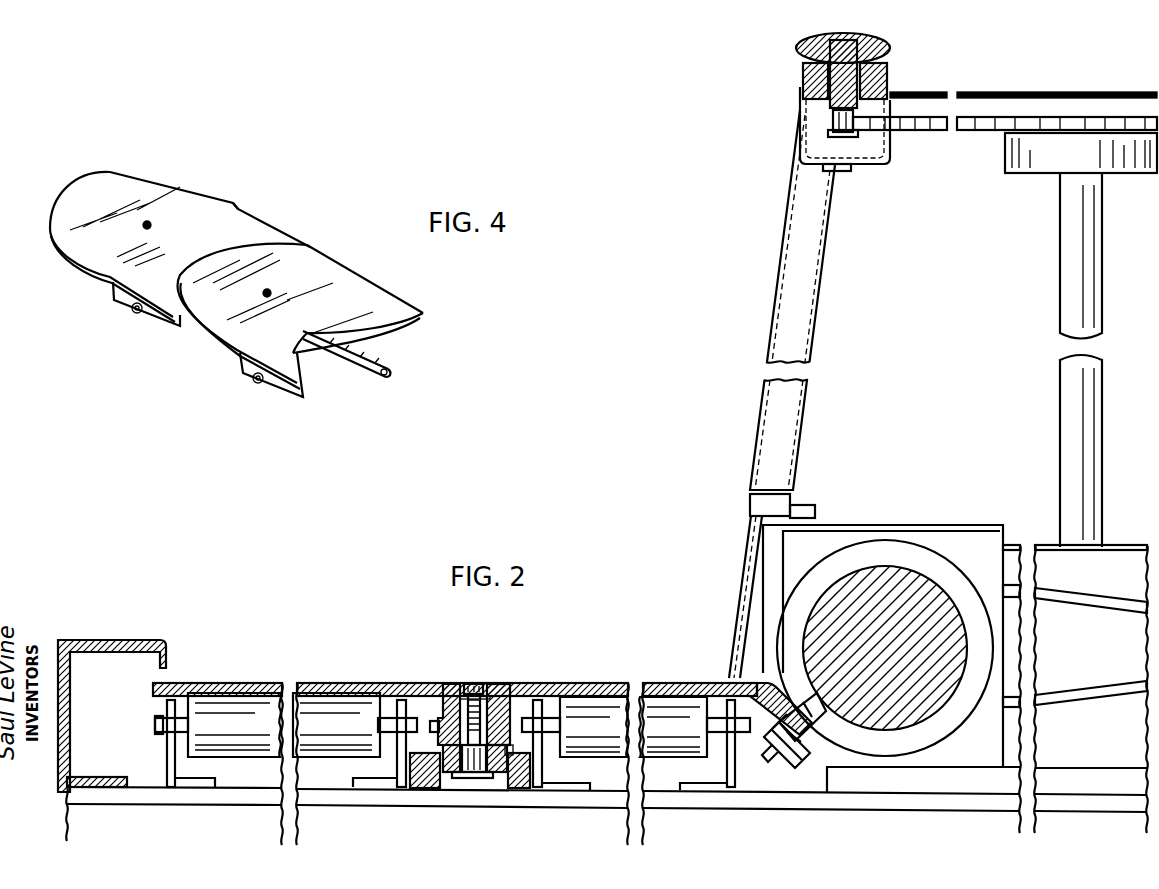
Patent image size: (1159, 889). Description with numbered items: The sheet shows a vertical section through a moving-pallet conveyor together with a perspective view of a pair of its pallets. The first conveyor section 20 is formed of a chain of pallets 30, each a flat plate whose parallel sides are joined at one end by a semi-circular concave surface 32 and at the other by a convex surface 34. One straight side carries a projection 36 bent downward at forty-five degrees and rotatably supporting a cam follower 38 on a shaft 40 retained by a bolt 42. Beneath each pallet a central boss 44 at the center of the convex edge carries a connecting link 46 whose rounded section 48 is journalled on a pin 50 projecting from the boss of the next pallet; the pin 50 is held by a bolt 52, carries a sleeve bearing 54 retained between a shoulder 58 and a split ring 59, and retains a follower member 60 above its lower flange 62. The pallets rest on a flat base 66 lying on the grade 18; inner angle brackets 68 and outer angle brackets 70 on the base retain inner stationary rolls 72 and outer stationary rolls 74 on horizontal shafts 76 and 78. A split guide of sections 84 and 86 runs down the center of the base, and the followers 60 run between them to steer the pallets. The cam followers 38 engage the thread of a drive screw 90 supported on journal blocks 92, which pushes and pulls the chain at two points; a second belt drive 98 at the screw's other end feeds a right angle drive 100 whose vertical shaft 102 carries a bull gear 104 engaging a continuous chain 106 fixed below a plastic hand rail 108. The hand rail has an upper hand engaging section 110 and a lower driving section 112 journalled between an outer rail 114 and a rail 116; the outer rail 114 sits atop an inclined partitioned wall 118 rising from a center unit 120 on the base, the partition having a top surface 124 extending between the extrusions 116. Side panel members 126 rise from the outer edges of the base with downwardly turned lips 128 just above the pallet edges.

In FIG. 2, the grade 18 is at (150, 834).
In FIG. 2, the first conveyor section 20 is at (303, 656).
In FIG. 4, the pallet 30 is at (123, 182).
In FIG. 2, the pallet 30 is at (320, 683).
In FIG. 4, the concave surface 32 is at (295, 360).
In FIG. 4, the convex surface 34 is at (237, 240).
In FIG. 4, the projection 36 is at (120, 292).
In FIG. 2, the projection 36 is at (768, 678).
In FIG. 4, the cam follower 38 is at (137, 313).
In FIG. 2, the cam follower 38 is at (841, 735).
In FIG. 2, the shaft 40 is at (800, 768).
In FIG. 2, the bolt 42 is at (772, 768).
In FIG. 2, the central boss 44 is at (450, 684).
In FIG. 4, the connecting link 46 is at (373, 357).
In FIG. 2, the connecting link 46 is at (512, 697).
In FIG. 4, the rounded section 48 is at (388, 375).
In FIG. 2, the rounded section 48 is at (438, 733).
In FIG. 2, the pin 50 is at (473, 778).
In FIG. 4, the bolt 52 is at (147, 225).
In FIG. 2, the bolt 52 is at (473, 684).
In FIG. 2, the sleeve bearing 54 is at (510, 750).
In FIG. 2, the shoulder 58 is at (458, 779).
In FIG. 2, the split ring 59 is at (497, 684).
In FIG. 2, the follower member 60 is at (440, 788).
In FIG. 2, the flange 62 is at (497, 788).
In FIG. 2, the base 66 is at (250, 796).
In FIG. 2, the inner angle bracket 68 is at (545, 783).
In FIG. 2, the outer angle bracket 70 is at (200, 780).
In FIG. 2, the inner stationary roll 72 is at (572, 704).
In FIG. 2, the outer stationary roll 74 is at (220, 705).
In FIG. 2, the shaft 76 is at (716, 715).
In FIG. 2, the shaft 78 is at (160, 731).
In FIG. 2, the guide section 84 is at (527, 789).
In FIG. 2, the guide section 86 is at (415, 790).
In FIG. 2, the drive screw 90 is at (890, 583).
In FIG. 2, the journal block 92 is at (970, 540).
In FIG. 2, the second belt drive 98 is at (1064, 596).
In FIG. 2, the right angle drive 100 is at (1092, 557).
In FIG. 2, the vertical shaft 102 is at (1064, 445).
In FIG. 2, the bull gear 104 is at (932, 132).
In FIG. 2, the continuous chain 106 is at (845, 148).
In FIG. 2, the hand rail 108 is at (886, 46).
In FIG. 2, the upper hand engaging section 110 is at (800, 52).
In FIG. 2, the lower driving section 112 is at (822, 130).
In FIG. 2, the outer rail 114 is at (801, 76).
In FIG. 2, the rail 116 is at (887, 82).
In FIG. 2, the partitioned wall 118 is at (777, 287).
In FIG. 2, the center unit 120 is at (808, 510).
In FIG. 2, the top surface 124 is at (998, 93).
In FIG. 2, the side panel member 126 is at (98, 641).
In FIG. 2, the lip 128 is at (163, 660).